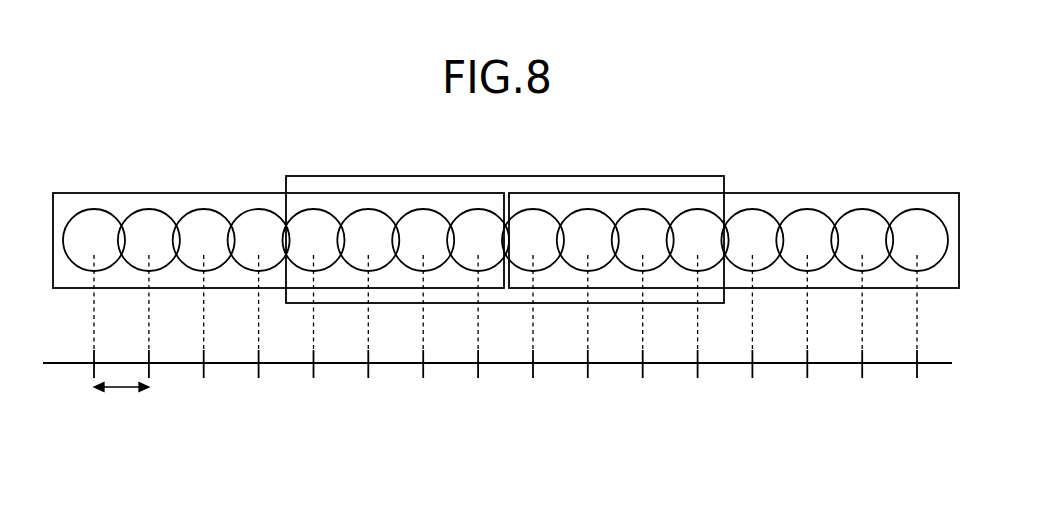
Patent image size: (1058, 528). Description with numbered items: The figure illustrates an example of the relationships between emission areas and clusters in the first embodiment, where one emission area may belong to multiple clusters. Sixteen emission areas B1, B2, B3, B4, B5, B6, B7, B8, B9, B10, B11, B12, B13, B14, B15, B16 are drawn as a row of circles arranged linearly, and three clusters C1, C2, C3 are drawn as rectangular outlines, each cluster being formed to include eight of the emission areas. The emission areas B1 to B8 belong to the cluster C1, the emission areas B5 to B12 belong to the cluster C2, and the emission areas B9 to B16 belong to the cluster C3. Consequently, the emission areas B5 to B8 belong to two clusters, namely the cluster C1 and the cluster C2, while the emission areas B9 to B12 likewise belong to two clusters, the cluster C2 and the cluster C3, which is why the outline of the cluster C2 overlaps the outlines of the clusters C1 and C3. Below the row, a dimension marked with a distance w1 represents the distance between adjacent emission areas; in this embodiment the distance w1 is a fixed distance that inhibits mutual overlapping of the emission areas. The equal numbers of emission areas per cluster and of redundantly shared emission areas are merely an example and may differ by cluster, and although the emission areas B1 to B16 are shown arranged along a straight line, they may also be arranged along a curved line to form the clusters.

The emission area B1 is at (94, 293).
The emission area B2 is at (149, 293).
The emission area B3 is at (204, 293).
The emission area B4 is at (259, 293).
The emission area B5 is at (314, 293).
The emission area B6 is at (368, 293).
The emission area B7 is at (423, 293).
The emission area B8 is at (478, 293).
The emission area B9 is at (533, 293).
The emission area B10 is at (588, 293).
The emission area B11 is at (643, 293).
The emission area B12 is at (698, 293).
The emission area B13 is at (752, 293).
The emission area B14 is at (807, 293).
The emission area B15 is at (862, 293).
The emission area B16 is at (917, 293).
The cluster C1 is at (160, 193).
The cluster C2 is at (487, 176).
The cluster C3 is at (821, 193).
The distance w1 is at (121, 404).